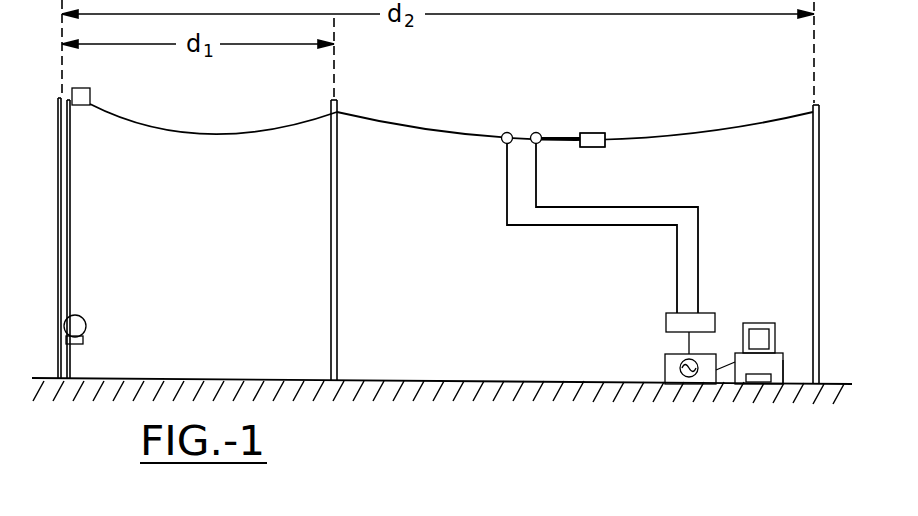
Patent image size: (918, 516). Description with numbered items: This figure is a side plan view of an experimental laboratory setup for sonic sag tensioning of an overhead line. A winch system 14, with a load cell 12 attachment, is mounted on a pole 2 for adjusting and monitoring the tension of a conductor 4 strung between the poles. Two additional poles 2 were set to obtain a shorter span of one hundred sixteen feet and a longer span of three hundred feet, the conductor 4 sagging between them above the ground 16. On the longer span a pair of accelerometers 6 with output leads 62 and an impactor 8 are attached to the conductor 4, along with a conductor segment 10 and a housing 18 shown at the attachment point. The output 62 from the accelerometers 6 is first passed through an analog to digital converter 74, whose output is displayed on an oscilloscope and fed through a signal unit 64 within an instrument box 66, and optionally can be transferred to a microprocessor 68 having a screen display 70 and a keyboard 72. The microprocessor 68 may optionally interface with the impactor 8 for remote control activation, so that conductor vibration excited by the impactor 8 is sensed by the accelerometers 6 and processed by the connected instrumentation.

The pole 2 is at (57, 183).
The conductor 4 is at (212, 133).
The accelerometers 6 is at (533, 132).
The impactor 8 is at (605, 133).
The conductor segment 10 is at (577, 134).
The load cell 12 is at (91, 89).
The winch system 14 is at (84, 318).
The ground 16 is at (397, 378).
The housing 18 is at (576, 133).
The output leads 62 is at (676, 263).
The signal generator 64 is at (676, 384).
The instrument unit 66 is at (665, 364).
The microprocessor 68 is at (784, 362).
The screen display 70 is at (762, 322).
The keyboard 72 is at (776, 386).
The analog to digital converter 74 is at (666, 323).